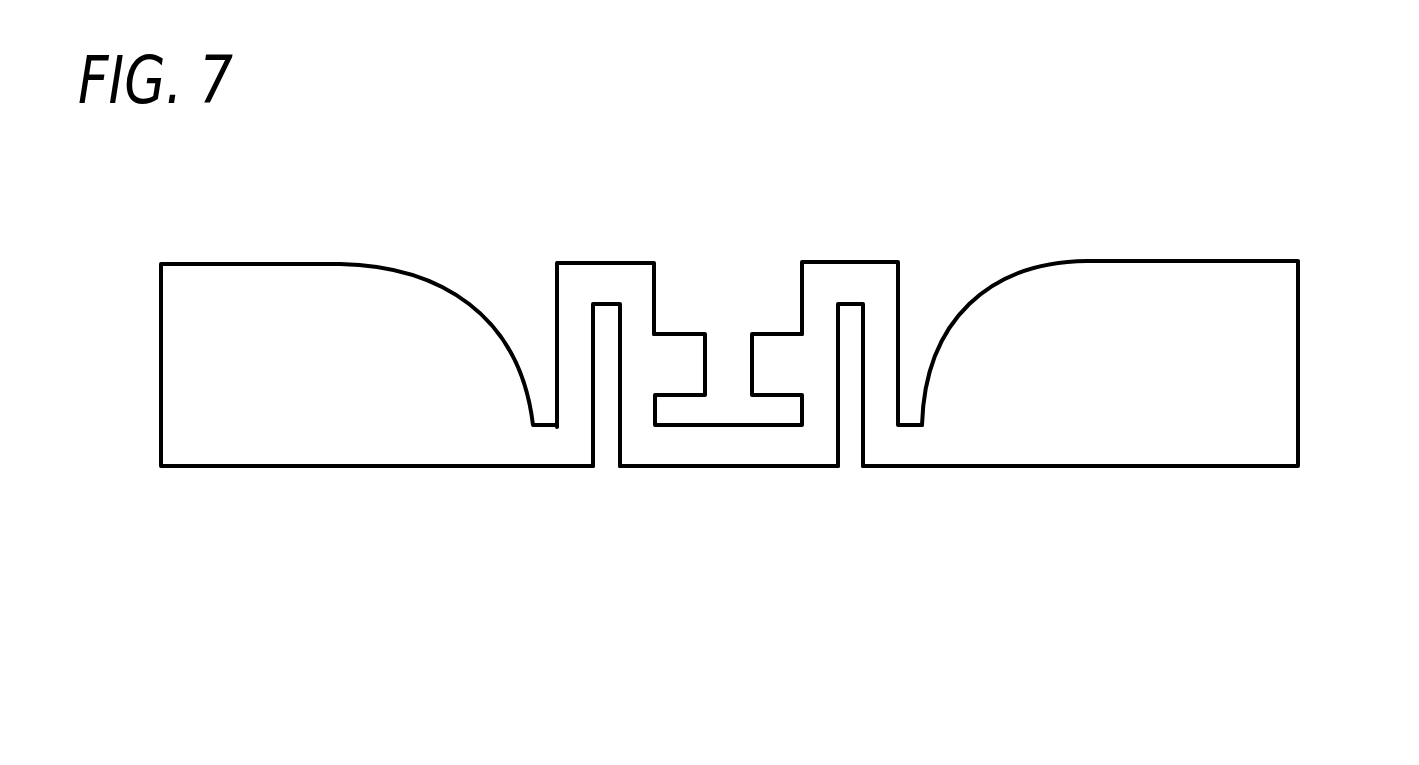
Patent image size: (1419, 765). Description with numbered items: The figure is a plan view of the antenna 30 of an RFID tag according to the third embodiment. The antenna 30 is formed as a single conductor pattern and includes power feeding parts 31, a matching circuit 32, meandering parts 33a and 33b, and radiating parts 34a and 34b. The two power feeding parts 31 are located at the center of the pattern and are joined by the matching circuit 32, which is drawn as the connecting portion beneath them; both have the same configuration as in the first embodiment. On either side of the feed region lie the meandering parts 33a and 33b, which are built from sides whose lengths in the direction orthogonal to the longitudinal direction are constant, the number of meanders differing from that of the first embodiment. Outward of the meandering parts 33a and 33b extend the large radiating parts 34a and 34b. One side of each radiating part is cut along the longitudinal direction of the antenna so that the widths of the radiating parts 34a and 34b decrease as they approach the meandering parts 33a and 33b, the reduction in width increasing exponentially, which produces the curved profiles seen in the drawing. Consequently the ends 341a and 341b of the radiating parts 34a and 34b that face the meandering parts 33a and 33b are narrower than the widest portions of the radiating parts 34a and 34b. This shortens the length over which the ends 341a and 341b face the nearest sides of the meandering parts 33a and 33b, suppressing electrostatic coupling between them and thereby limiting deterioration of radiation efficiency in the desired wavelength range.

The antenna 30 is at (1302, 364).
The power feeding parts 31 is at (683, 367).
The matching circuit 32 is at (800, 443).
The meandering part 33a is at (654, 257).
The meandering part 33b is at (925, 255).
The radiating part 34a is at (258, 455).
The radiating part 34b is at (1243, 455).
The end of radiating part 341a is at (515, 406).
The end of radiating part 341b is at (941, 404).